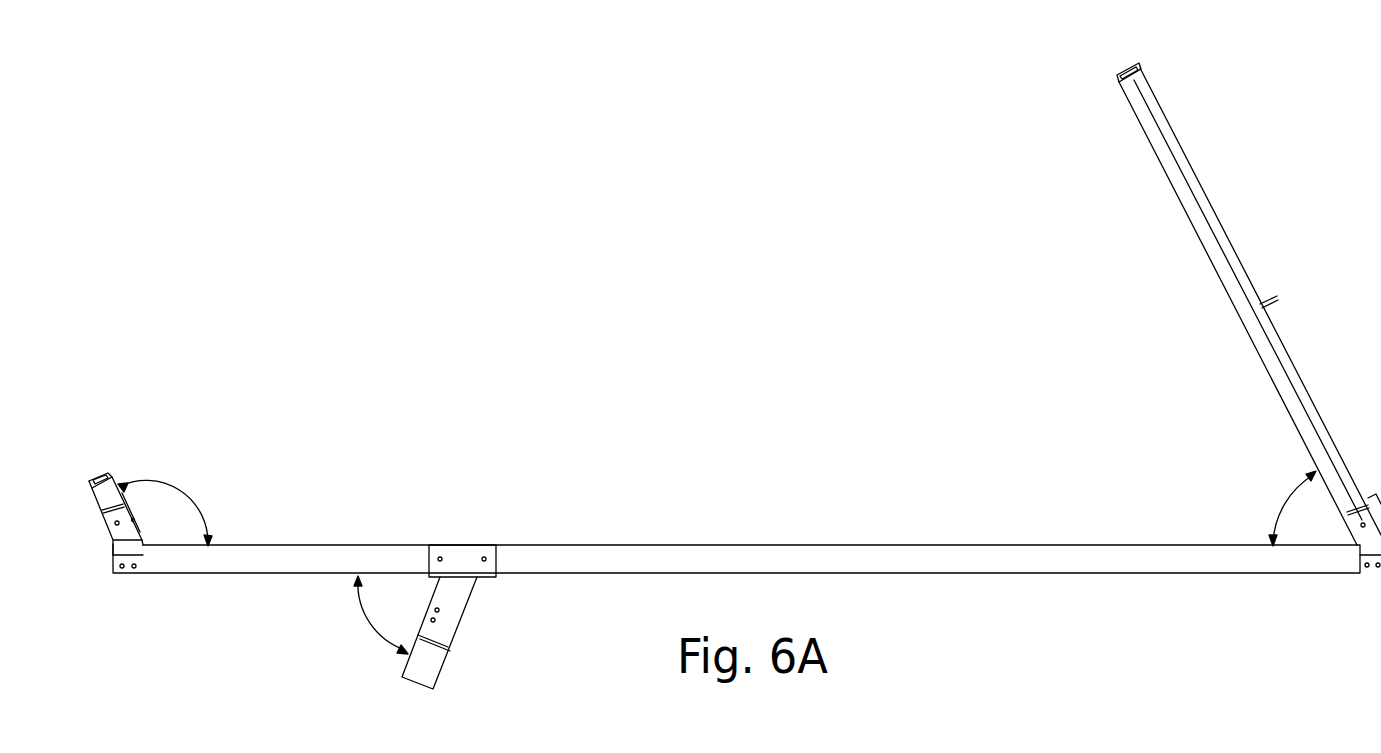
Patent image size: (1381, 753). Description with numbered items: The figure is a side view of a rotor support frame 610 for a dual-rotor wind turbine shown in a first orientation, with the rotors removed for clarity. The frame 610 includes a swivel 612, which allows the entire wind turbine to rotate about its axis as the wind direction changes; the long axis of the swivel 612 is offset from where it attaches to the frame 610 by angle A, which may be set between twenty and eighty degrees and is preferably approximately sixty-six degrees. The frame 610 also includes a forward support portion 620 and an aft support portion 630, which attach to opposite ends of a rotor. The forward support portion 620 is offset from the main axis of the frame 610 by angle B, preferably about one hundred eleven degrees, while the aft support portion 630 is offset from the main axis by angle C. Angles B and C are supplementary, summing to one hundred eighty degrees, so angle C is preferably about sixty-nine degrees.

The rotor support frame 610 is at (598, 98).
The swivel 612 is at (460, 633).
The forward support portion 620 is at (97, 510).
The aft support portion 630 is at (1153, 153).
The angle A is at (372, 628).
The angle B is at (183, 492).
The angle C is at (1282, 498).